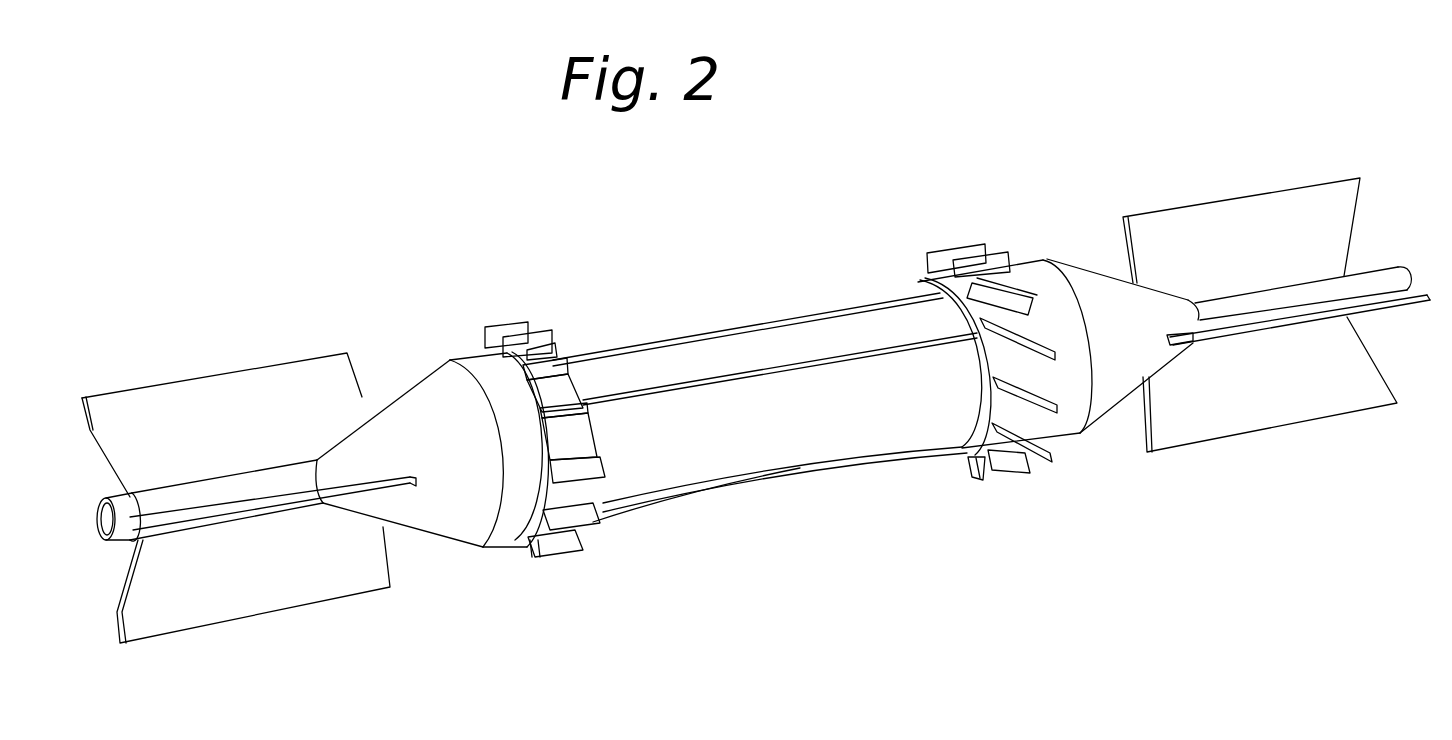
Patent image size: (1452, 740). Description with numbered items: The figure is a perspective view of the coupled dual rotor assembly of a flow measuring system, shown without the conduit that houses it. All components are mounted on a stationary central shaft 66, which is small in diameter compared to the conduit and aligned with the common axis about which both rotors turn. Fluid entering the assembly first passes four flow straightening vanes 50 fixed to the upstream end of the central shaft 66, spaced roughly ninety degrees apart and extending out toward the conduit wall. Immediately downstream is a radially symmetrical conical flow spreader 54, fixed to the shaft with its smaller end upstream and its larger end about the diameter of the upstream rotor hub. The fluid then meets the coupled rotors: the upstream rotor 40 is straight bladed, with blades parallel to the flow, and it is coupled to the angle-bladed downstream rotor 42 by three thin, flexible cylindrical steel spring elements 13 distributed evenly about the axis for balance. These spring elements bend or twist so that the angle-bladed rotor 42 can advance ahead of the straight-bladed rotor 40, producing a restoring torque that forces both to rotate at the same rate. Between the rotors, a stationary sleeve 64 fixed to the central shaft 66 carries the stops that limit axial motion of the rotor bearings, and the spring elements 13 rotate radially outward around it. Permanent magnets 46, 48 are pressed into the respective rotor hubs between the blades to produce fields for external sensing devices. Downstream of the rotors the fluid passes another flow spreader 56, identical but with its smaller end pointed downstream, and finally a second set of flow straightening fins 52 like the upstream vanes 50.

The spring elements 13 is at (787, 477).
The upstream rotor 40 is at (577, 495).
The downstream rotor 42 is at (1027, 415).
The permanent magnet 46 is at (1023, 273).
The permanent magnet 48 is at (467, 357).
The flow straightening vanes 50 is at (203, 397).
The flow straightening fins 52 is at (1248, 220).
The conical flow spreader 54 is at (457, 513).
The flow spreader 56 is at (1127, 373).
The stationary sleeve 64 is at (877, 420).
The central shaft 66 is at (108, 542).